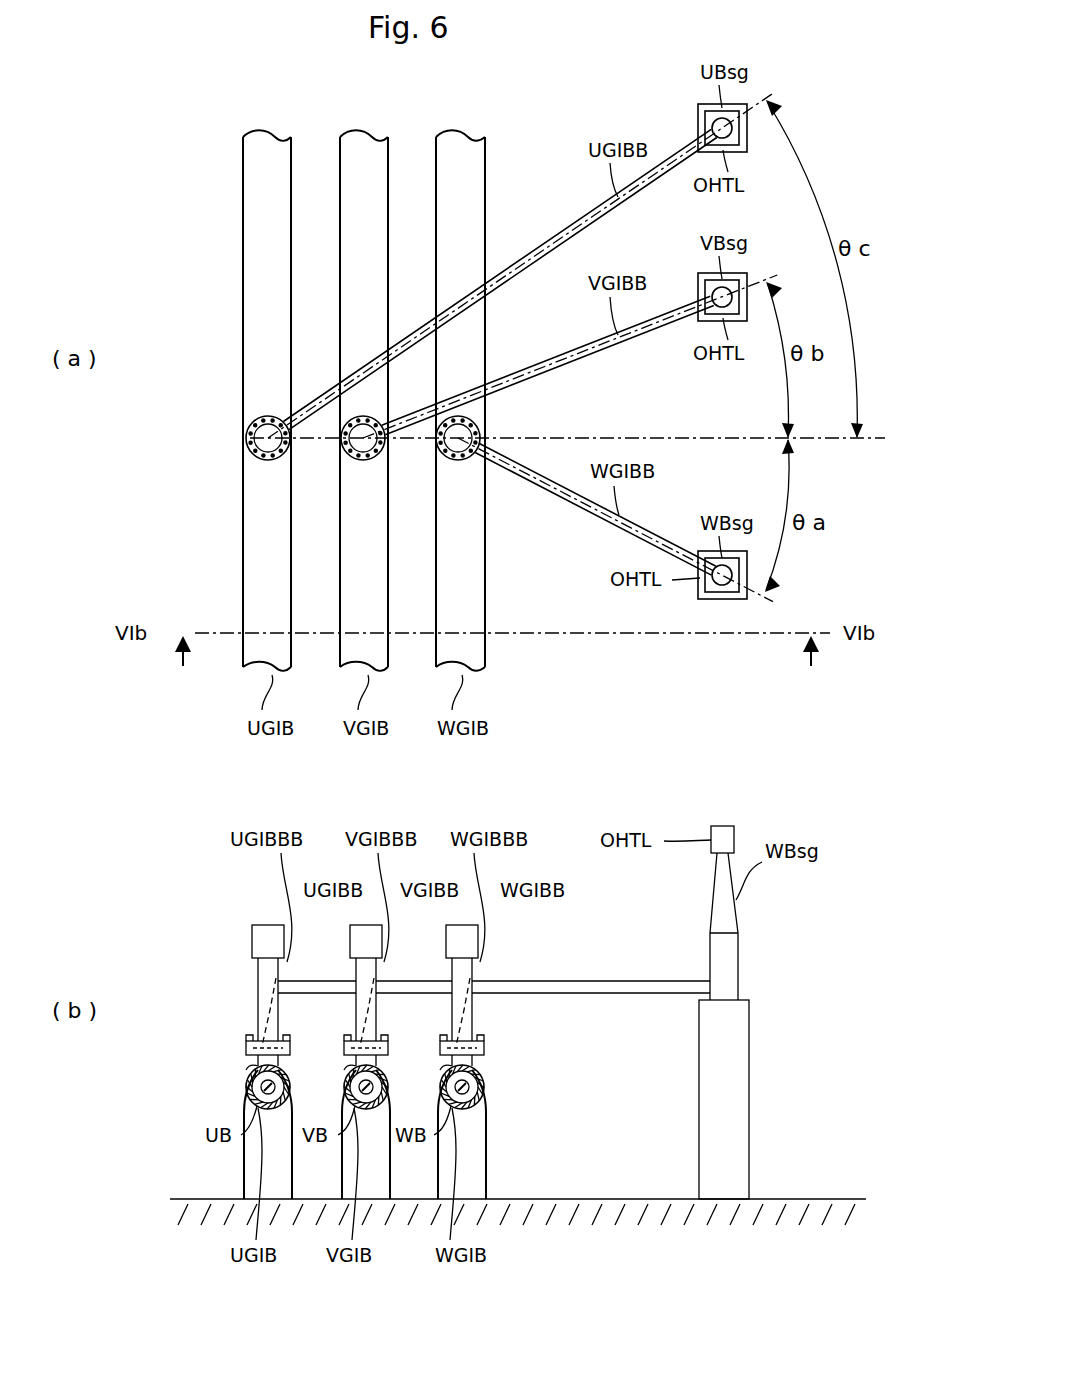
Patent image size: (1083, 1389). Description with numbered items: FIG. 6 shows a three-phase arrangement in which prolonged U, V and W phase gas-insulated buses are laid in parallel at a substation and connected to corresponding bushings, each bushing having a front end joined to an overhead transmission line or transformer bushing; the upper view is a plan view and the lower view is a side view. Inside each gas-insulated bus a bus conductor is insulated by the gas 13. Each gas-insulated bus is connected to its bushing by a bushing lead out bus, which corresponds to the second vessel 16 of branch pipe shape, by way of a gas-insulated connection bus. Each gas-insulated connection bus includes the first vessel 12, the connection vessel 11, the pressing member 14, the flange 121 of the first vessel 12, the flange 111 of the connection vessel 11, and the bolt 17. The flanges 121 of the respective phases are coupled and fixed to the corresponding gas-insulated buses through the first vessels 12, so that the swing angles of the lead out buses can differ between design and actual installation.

The connection vessel 11 is at (258, 1016).
The flange of the connection vessel 111 is at (262, 1010).
The first vessel 12 is at (246, 1092).
The flange of the first vessel 121 is at (249, 1068).
The gas 13 is at (276, 1092).
The pressing member 14 is at (252, 456).
The second vessel 16 is at (512, 980).
The bolt 17 is at (246, 1038).